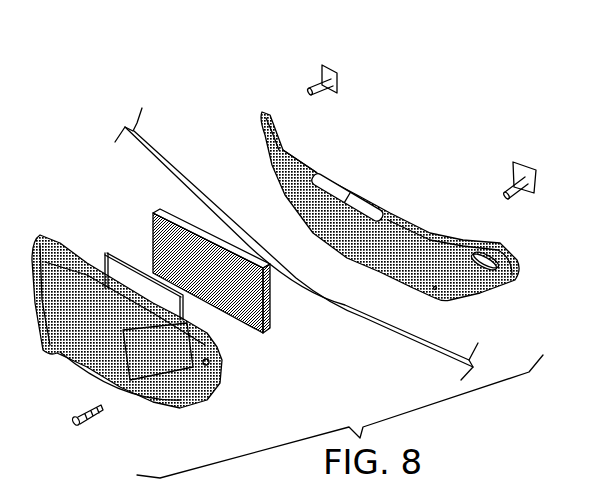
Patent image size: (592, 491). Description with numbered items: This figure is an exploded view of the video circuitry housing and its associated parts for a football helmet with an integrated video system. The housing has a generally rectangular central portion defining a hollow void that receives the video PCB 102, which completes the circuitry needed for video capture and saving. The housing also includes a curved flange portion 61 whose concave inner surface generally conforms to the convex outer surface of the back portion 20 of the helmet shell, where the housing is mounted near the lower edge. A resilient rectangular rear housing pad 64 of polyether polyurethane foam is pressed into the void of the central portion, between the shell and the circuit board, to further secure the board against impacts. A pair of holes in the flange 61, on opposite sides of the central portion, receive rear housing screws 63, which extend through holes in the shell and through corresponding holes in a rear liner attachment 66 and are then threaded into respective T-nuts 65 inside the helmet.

The back portion 20 is at (170, 166).
The curved flange portion 61 is at (203, 382).
The rear housing screws 63 is at (95, 422).
The rear housing pad 64 is at (152, 218).
The T-nuts 65 is at (317, 78).
The rear liner attachment 66 is at (408, 223).
The video PCB 102 is at (105, 252).